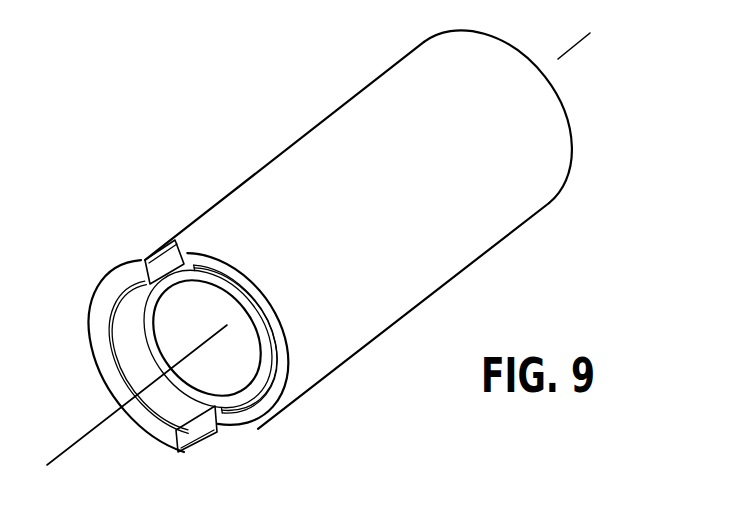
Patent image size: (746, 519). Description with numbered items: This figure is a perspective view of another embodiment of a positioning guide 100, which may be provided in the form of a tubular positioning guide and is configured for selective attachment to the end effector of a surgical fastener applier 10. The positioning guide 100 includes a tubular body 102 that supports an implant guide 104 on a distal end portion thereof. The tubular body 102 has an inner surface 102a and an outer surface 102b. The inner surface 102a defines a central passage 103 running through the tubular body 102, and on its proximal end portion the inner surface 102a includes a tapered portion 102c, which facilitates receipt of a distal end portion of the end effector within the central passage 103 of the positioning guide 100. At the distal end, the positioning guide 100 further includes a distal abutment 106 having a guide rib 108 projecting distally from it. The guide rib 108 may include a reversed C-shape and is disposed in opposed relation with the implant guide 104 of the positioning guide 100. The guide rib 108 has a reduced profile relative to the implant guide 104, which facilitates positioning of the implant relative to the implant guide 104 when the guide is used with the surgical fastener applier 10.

The surgical fastener applier 10 is at (62, 464).
The positioning guide 100 is at (226, 190).
The tubular body 102 is at (354, 102).
The inner surface 102a is at (174, 309).
The outer surface 102b is at (470, 98).
The tapered portion 102c is at (645, 510).
The central passage 103 is at (222, 367).
The implant guide 104 is at (114, 288).
The distal abutment 106 is at (278, 403).
The guide rib 108 is at (262, 366).